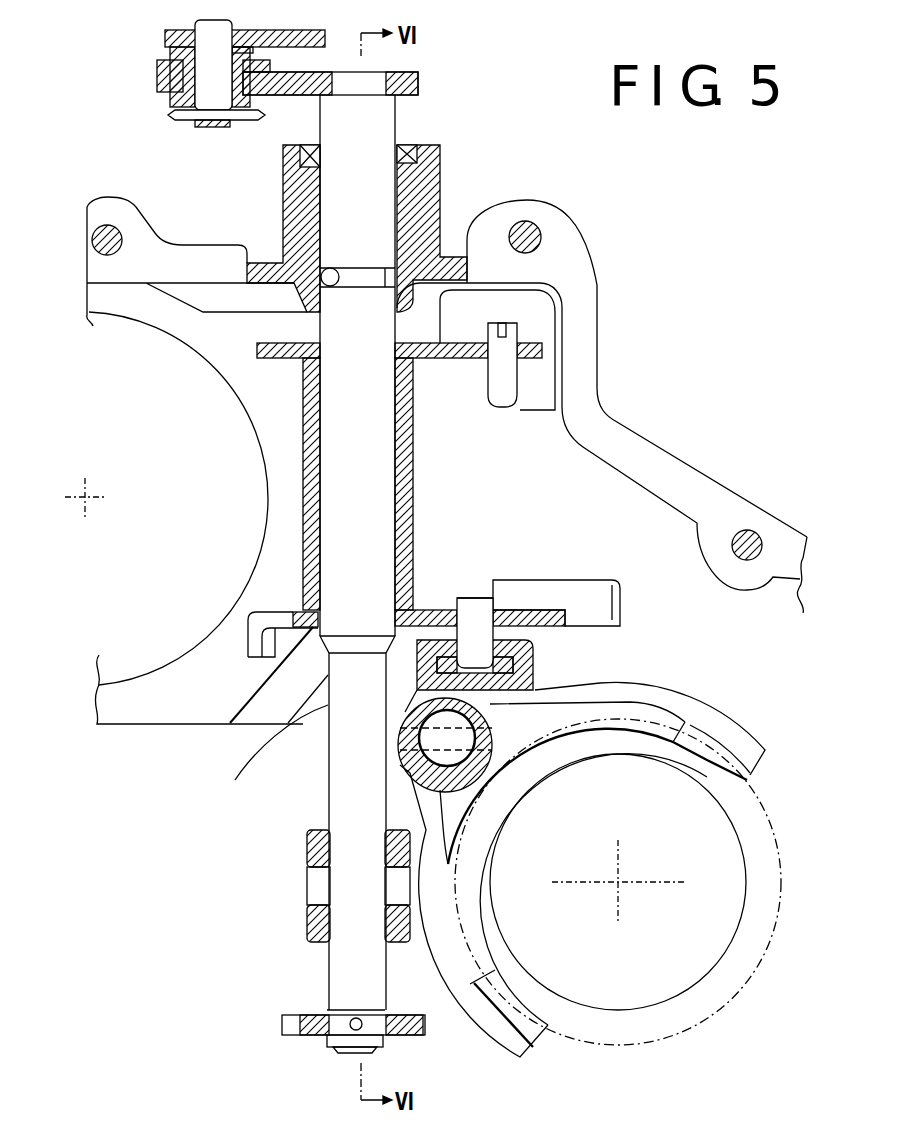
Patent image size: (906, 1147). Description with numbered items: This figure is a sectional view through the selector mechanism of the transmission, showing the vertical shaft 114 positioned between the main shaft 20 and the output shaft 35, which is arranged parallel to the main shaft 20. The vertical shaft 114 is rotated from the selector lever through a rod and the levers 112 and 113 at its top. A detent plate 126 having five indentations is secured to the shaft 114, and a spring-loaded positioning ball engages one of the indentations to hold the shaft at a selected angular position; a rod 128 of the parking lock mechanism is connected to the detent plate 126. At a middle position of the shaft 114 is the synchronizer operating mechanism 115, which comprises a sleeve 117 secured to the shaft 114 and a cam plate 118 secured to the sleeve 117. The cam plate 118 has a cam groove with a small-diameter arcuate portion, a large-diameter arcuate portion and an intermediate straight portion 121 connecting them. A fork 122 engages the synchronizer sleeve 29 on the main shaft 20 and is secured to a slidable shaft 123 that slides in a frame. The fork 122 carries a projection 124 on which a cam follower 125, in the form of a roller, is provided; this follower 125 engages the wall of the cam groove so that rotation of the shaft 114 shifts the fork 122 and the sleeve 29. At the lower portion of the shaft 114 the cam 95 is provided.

The main shaft 20 is at (620, 881).
The synchronizer sleeve 29 is at (740, 992).
The output shaft 35 is at (90, 497).
The cam 95 is at (425, 1032).
The lever 112 is at (325, 40).
The lever 113 is at (418, 85).
The vertical shaft 114 is at (335, 778).
The synchronizer operating mechanism 115 is at (697, 648).
The sleeve 117 is at (412, 478).
The cam plate 118 is at (545, 608).
The intermediate straight portion 121 is at (457, 600).
The fork 122 is at (707, 712).
The slidable shaft 123 is at (540, 693).
The projection 124 is at (540, 648).
The cam follower 125 is at (488, 597).
The detent plate 126 is at (455, 360).
The rod 128 is at (512, 393).